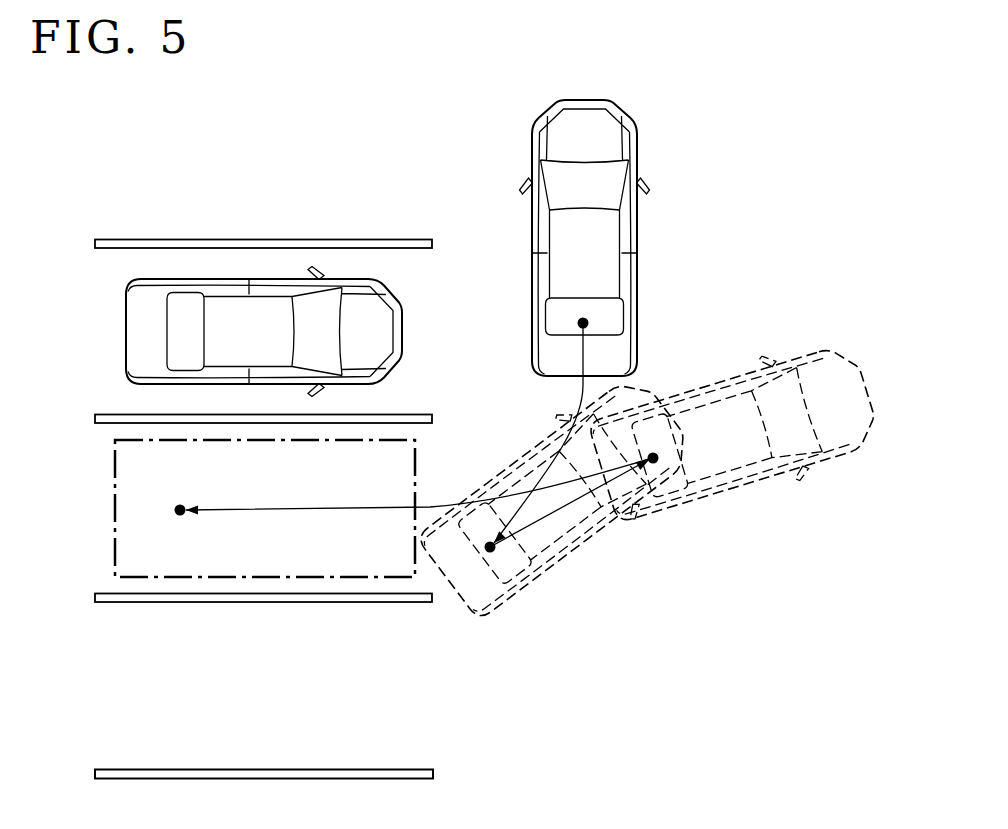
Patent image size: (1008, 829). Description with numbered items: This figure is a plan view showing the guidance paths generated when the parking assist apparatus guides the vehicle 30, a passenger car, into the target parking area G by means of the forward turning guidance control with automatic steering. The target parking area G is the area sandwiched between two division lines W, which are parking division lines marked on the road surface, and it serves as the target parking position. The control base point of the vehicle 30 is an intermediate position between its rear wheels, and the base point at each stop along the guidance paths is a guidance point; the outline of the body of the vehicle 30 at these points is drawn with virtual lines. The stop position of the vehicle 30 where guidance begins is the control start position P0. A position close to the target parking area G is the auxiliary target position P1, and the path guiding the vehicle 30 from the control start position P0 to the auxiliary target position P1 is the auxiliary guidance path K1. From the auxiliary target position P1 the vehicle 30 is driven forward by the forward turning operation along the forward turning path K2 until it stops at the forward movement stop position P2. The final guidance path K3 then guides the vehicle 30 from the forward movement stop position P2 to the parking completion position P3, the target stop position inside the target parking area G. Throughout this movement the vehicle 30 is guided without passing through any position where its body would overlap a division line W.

The vehicle 30 is at (637, 212).
The division line W is at (203, 239).
The target parking area G is at (115, 500).
The control start position P0 is at (583, 323).
The auxiliary target position P1 is at (488, 549).
The forward movement stop position P2 is at (656, 461).
The parking completion position P3 is at (178, 510).
The auxiliary guidance path K1 is at (573, 399).
The forward turning path K2 is at (549, 508).
The final guidance path K3 is at (440, 505).